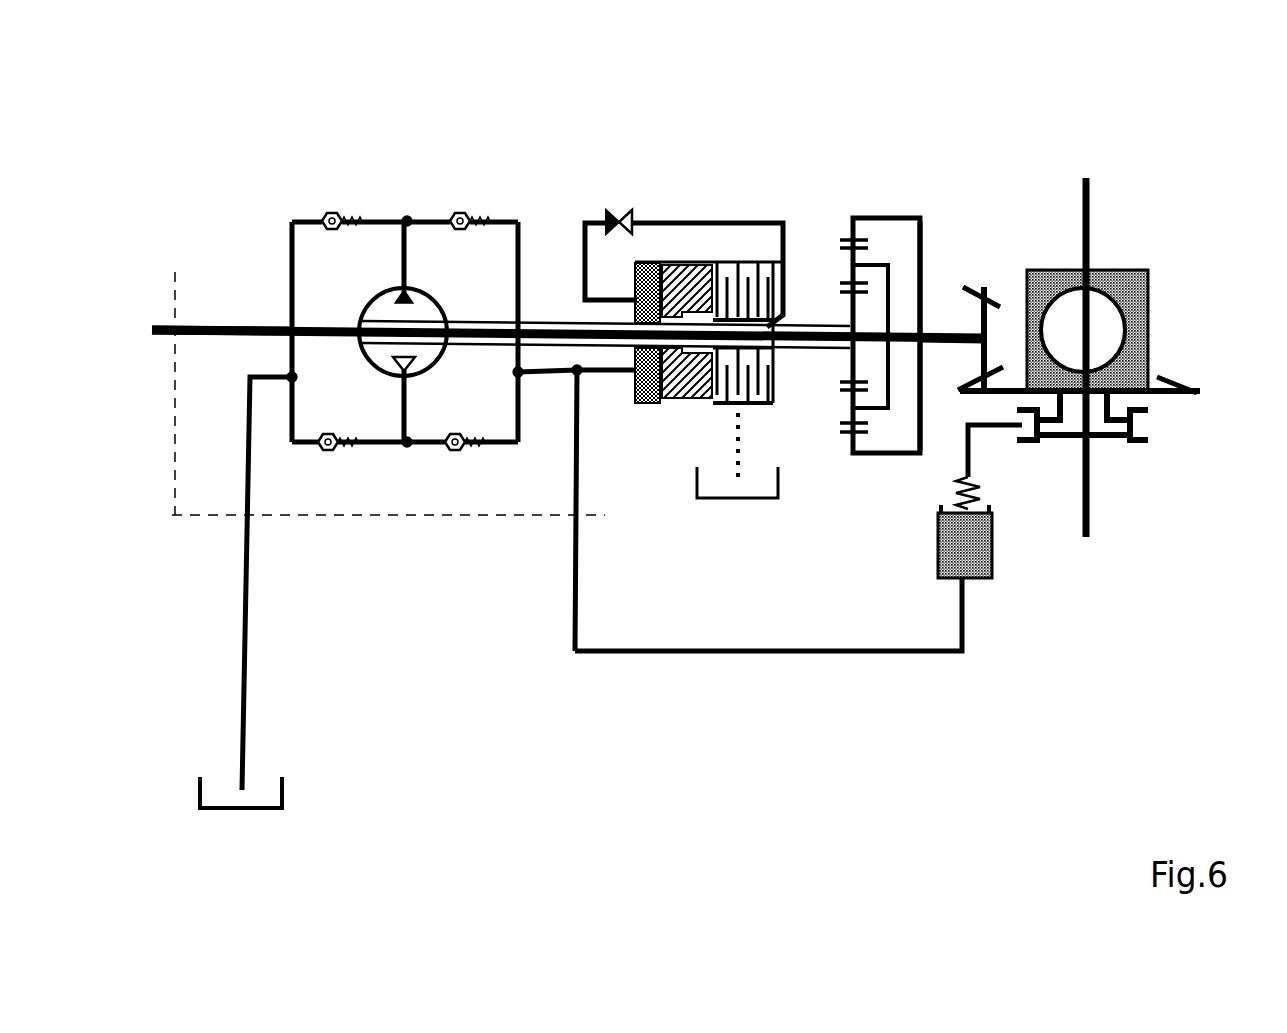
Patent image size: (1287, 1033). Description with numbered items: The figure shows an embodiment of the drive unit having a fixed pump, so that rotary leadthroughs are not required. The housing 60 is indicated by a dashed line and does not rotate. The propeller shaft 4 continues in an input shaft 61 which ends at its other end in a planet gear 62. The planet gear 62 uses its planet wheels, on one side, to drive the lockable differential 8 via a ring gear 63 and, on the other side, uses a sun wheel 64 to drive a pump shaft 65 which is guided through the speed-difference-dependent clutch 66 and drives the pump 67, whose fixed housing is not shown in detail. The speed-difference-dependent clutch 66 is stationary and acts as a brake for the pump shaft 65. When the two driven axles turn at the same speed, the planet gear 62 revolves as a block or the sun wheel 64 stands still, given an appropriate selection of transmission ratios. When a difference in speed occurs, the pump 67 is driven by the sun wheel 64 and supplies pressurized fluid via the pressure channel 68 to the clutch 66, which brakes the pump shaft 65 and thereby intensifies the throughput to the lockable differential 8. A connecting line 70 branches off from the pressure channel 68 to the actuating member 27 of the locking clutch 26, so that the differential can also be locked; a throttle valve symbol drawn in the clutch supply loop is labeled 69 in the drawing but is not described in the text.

The propeller shaft 4 is at (157, 326).
The lockable differential 8 is at (1166, 305).
The locking clutch 26 is at (1138, 423).
The actuating member 27 is at (990, 571).
The housing 60 is at (172, 518).
The input shaft 61 is at (217, 326).
The planet gear 62 is at (880, 198).
The ring gear 63 is at (921, 262).
The sun wheel 64 is at (850, 318).
The pump shaft 65 is at (555, 323).
The speed-difference-dependent clutch 66 is at (690, 236).
The pump 67 is at (387, 307).
The pressure channel 68 is at (545, 375).
The throttle valve 69 is at (618, 221).
The connecting line 70 is at (828, 656).